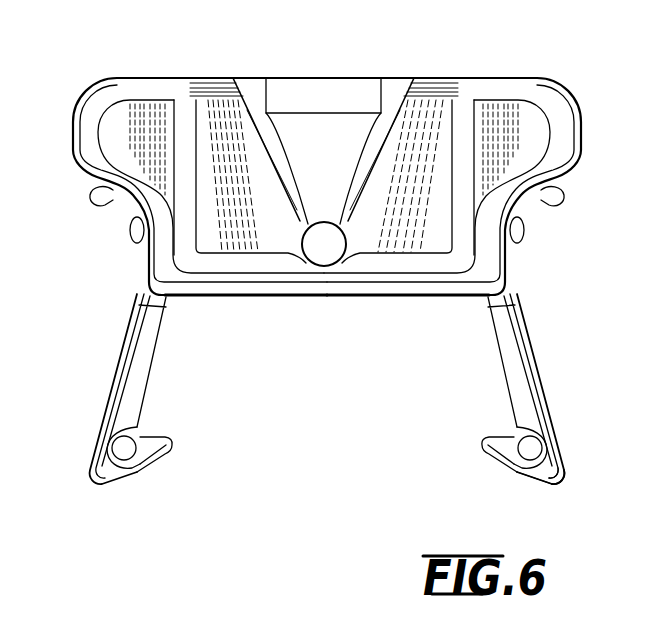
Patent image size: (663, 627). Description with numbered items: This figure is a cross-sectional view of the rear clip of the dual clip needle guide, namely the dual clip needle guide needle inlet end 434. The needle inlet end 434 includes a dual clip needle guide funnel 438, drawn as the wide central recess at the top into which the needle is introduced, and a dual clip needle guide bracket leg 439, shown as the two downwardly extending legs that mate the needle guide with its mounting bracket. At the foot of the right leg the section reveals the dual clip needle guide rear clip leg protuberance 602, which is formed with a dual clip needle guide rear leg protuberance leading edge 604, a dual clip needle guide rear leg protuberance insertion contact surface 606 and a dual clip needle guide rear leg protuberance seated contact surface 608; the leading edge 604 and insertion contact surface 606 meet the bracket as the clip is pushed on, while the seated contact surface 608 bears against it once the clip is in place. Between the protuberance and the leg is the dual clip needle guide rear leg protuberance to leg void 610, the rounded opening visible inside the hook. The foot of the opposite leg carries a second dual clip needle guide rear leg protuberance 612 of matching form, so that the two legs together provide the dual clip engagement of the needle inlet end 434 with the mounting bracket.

The dual clip needle guide needle inlet end 434 is at (205, 70).
The dual clip needle guide funnel 438 is at (340, 133).
The dual clip needle guide bracket leg 439 is at (120, 340).
The second dual clip needle guide rear leg protuberance 612 is at (142, 465).
The dual clip needle guide rear clip leg protuberance 602 is at (523, 470).
The dual clip needle guide rear leg protuberance leading edge 604 is at (547, 480).
The dual clip needle guide rear leg protuberance insertion contact surface 606 is at (503, 457).
The dual clip needle guide rear leg protuberance seated contact surface 608 is at (507, 437).
The dual clip needle guide rear leg protuberance to leg void 610 is at (533, 447).